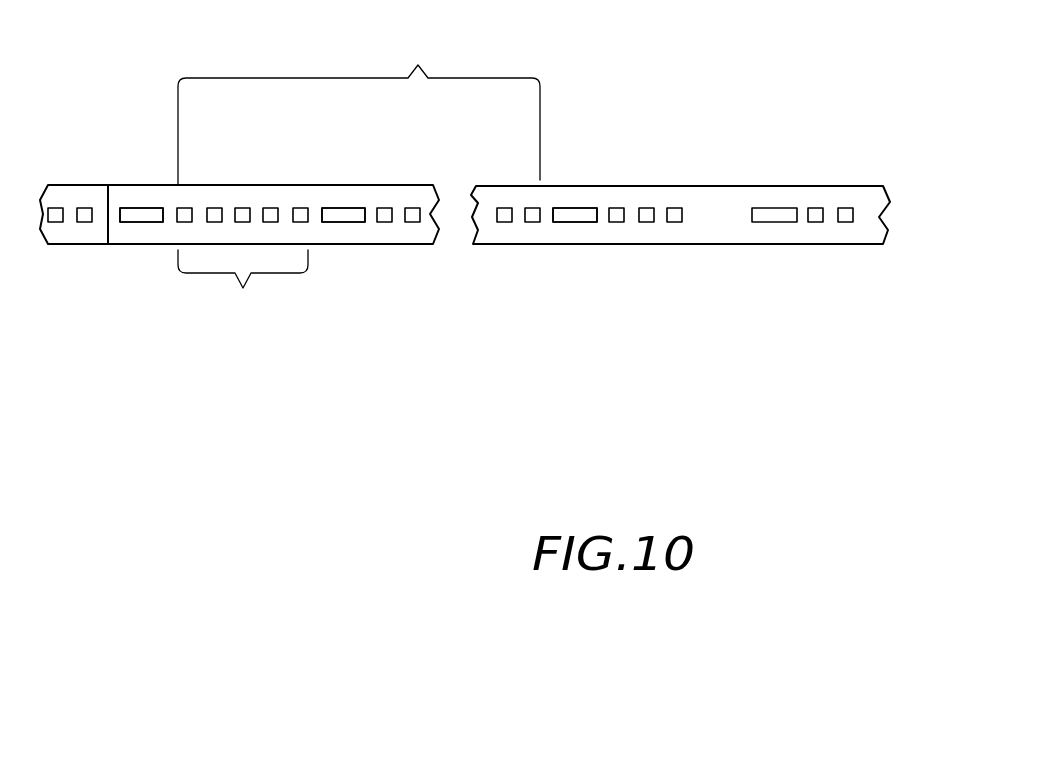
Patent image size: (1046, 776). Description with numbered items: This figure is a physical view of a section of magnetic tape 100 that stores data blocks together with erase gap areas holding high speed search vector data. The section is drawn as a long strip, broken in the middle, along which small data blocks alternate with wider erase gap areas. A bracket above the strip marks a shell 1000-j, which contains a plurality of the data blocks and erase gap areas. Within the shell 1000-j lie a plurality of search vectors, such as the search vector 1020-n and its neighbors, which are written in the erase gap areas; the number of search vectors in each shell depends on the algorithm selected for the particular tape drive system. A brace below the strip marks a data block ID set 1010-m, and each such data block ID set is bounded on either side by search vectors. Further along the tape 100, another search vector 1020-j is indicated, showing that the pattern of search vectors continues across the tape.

The magnetic tape 100 is at (585, 405).
The shell 1000-j is at (359, 94).
The data block ID set 1010-m is at (243, 288).
The search vector 1020-n is at (133, 222).
The search vector 1020-j is at (576, 208).